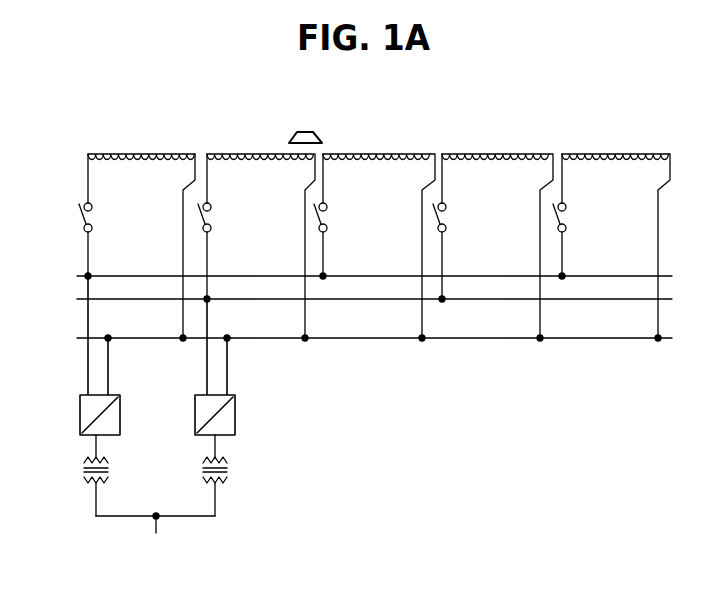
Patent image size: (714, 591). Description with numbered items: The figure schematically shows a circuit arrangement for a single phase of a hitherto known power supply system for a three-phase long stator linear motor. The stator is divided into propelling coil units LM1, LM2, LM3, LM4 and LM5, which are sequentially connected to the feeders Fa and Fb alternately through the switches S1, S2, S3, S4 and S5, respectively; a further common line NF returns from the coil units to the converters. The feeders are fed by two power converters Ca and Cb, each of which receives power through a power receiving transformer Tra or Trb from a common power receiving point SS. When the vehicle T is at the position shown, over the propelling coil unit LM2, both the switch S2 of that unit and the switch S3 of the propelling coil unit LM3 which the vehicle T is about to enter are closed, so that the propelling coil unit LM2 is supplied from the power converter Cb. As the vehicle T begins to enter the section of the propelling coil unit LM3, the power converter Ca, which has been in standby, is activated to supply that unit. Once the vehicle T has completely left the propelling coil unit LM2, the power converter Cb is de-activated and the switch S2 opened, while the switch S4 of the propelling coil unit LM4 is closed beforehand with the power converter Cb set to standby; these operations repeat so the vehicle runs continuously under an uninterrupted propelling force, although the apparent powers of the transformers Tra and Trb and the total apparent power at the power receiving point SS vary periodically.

The propelling coil unit LM1 is at (136, 154).
The propelling coil unit LM2 is at (252, 154).
The propelling coil unit LM3 is at (380, 154).
The propelling coil unit LM4 is at (500, 154).
The propelling coil unit LM5 is at (611, 154).
The switch S1 is at (106, 241).
The switch S2 is at (225, 252).
The switch S3 is at (341, 241).
The switch S4 is at (460, 252).
The switch S5 is at (580, 241).
The vehicle T is at (307, 131).
The feeder Fa is at (351, 275).
The feeder Fb is at (351, 299).
The neutral feeder line NF is at (351, 340).
The power converter Ca is at (122, 355).
The power converter Cb is at (237, 367).
The power receiving transformer Tra is at (122, 475).
The power receiving transformer Trb is at (241, 475).
The power receiving point SS is at (155, 539).